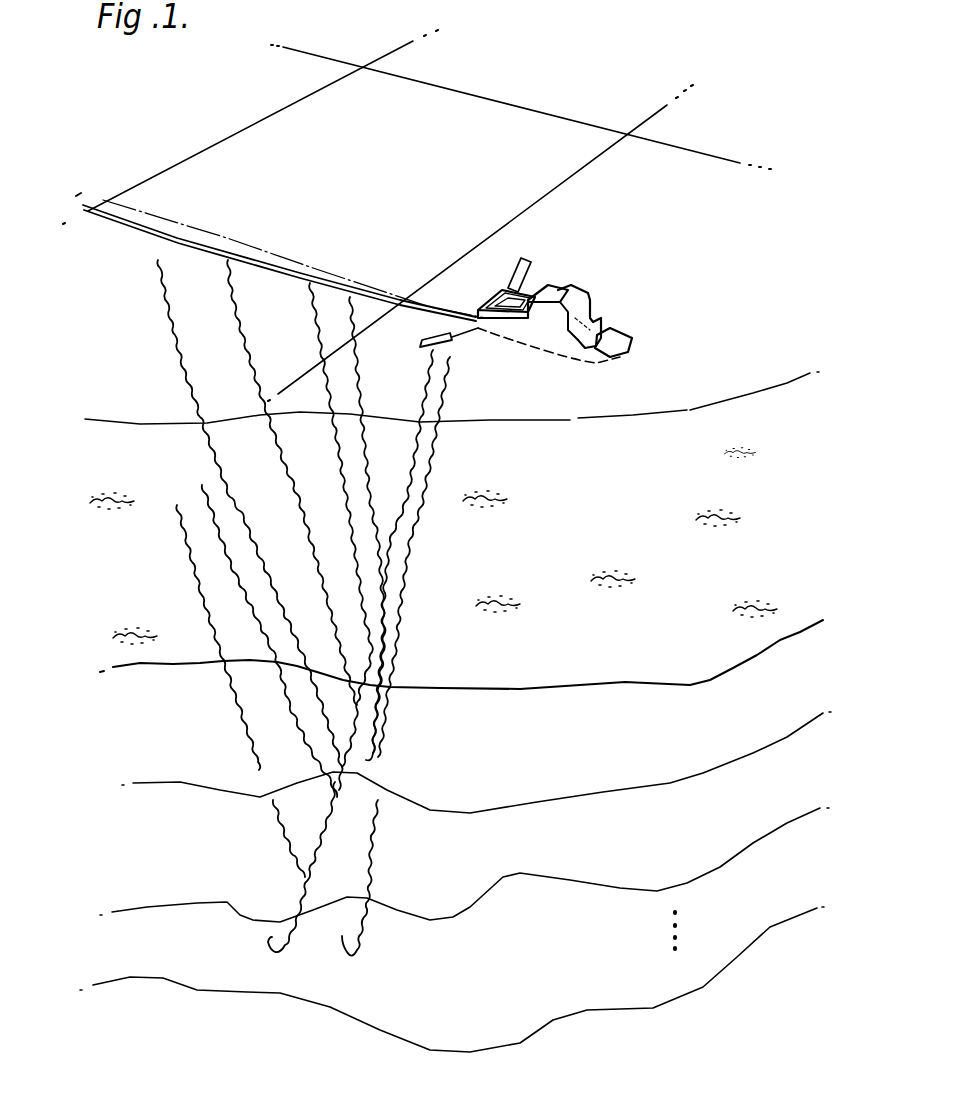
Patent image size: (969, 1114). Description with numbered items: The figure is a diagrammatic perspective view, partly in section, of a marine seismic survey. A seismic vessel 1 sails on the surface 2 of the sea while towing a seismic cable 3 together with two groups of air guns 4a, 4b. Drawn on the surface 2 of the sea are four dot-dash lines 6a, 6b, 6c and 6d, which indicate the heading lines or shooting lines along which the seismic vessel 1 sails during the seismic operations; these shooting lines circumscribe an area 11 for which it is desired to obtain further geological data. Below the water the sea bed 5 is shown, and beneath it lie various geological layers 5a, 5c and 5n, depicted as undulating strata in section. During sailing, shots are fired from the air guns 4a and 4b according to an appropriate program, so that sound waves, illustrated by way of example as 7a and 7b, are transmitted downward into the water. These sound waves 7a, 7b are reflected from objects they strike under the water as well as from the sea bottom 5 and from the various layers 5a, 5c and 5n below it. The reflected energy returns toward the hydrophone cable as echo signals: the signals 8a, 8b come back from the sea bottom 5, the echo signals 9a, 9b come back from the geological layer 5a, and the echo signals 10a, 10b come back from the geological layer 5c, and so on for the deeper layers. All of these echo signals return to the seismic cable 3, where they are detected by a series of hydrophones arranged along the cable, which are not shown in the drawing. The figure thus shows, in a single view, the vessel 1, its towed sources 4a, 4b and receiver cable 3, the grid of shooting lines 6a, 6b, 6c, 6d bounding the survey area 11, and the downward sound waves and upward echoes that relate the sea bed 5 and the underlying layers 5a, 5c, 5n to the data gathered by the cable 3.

The seismic vessel 1 is at (577, 283).
The surface of the sea 2 is at (717, 362).
The seismic cable 3 is at (229, 262).
The group of air guns 4a is at (452, 340).
The group of air guns 4b is at (532, 262).
The sea bed 5 is at (748, 656).
The geological layer 5a is at (686, 772).
The geological layer 5c is at (703, 871).
The geological layer 5n is at (673, 980).
The shooting line 6a is at (268, 252).
The shooting line 6b is at (572, 176).
The shooting line 6c is at (516, 97).
The shooting line 6d is at (258, 126).
The sound wave 7a is at (416, 458).
The sound wave 7b is at (427, 479).
The echo signal 8a is at (361, 404).
The echo signal 8b is at (338, 434).
The echo signal 9a is at (290, 468).
The echo signal 9b is at (214, 450).
The echo signal 10a is at (218, 537).
The echo signal 10b is at (200, 585).
The area 11 is at (402, 171).